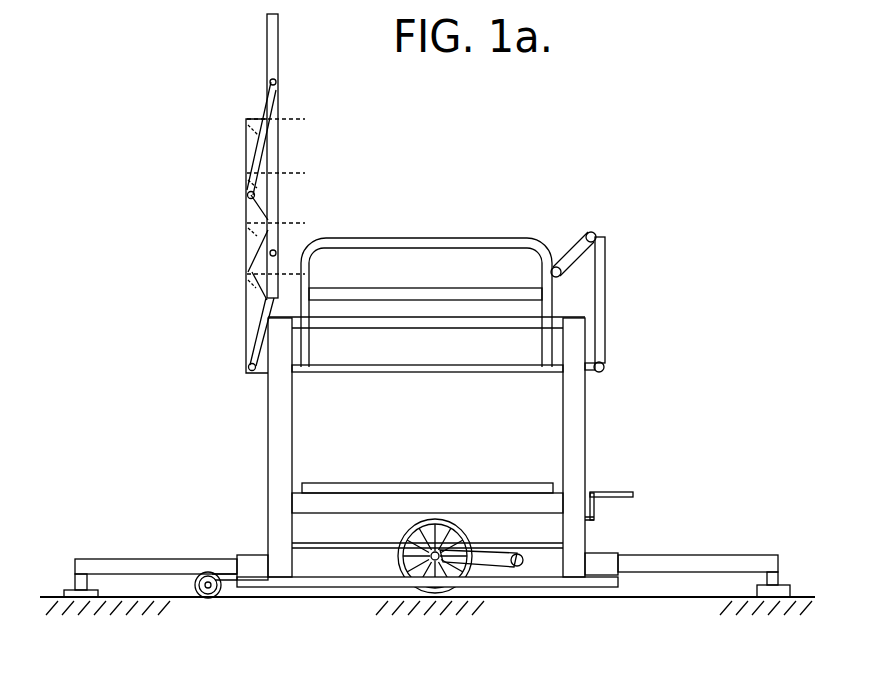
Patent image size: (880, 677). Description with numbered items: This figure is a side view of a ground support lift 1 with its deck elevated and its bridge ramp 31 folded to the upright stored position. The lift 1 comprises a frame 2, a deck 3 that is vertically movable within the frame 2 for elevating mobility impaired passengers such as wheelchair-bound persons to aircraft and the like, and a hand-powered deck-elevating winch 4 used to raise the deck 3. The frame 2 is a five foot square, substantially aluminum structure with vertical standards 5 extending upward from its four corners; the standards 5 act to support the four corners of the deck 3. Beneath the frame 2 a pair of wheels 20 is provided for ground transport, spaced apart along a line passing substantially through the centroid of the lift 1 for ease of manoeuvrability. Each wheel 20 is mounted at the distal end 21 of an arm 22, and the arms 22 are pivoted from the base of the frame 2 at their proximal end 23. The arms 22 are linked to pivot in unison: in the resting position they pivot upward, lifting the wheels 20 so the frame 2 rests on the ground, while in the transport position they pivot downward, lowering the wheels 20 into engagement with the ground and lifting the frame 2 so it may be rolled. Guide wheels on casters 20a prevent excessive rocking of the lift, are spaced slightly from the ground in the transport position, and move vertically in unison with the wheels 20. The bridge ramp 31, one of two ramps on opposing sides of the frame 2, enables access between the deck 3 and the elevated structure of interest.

The ground support lift 1 is at (638, 220).
The frame 2 is at (431, 447).
The deck 3 is at (328, 373).
The deck-elevating winch 4 is at (525, 520).
The vertical standards 5 is at (268, 450).
The wheels 20 is at (402, 588).
The casters 20a is at (230, 580).
The distal end 21 is at (436, 562).
The arm 22 is at (483, 560).
The proximal end 23 is at (520, 560).
The bridge ramp 31 is at (245, 240).